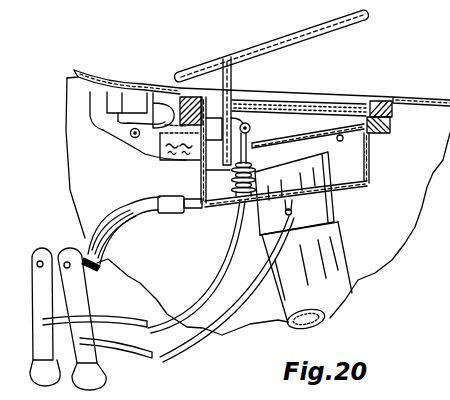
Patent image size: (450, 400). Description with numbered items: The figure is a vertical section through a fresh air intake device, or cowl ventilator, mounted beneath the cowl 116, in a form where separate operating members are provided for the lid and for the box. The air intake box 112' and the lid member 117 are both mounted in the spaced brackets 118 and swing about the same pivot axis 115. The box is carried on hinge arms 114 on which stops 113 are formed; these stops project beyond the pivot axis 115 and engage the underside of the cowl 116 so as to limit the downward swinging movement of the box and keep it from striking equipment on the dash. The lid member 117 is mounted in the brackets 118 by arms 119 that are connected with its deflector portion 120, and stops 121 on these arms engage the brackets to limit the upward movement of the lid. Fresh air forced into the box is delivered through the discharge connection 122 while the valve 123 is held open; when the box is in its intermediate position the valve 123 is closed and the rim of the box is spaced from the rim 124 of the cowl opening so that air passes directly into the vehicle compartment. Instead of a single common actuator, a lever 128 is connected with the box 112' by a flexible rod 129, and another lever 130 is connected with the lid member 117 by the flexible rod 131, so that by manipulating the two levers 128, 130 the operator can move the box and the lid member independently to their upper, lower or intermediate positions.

The air intake box 112' is at (304, 147).
The stops 113 is at (102, 128).
The hinge arms 114 is at (138, 161).
The pivot axis 115 is at (134, 138).
The cowl 116 is at (91, 76).
The lid member 117 is at (303, 24).
The brackets 118 is at (140, 85).
The arms 119 is at (167, 161).
The deflector portion 120 is at (235, 80).
The stops 121 is at (155, 104).
The discharge connection 122 is at (342, 256).
The valve 123 is at (252, 148).
The rim of the cowl opening 124 is at (393, 120).
The lever 128 is at (86, 318).
The flexible rod 129 is at (237, 320).
The lever 130 is at (36, 256).
The flexible rod 131 is at (202, 283).